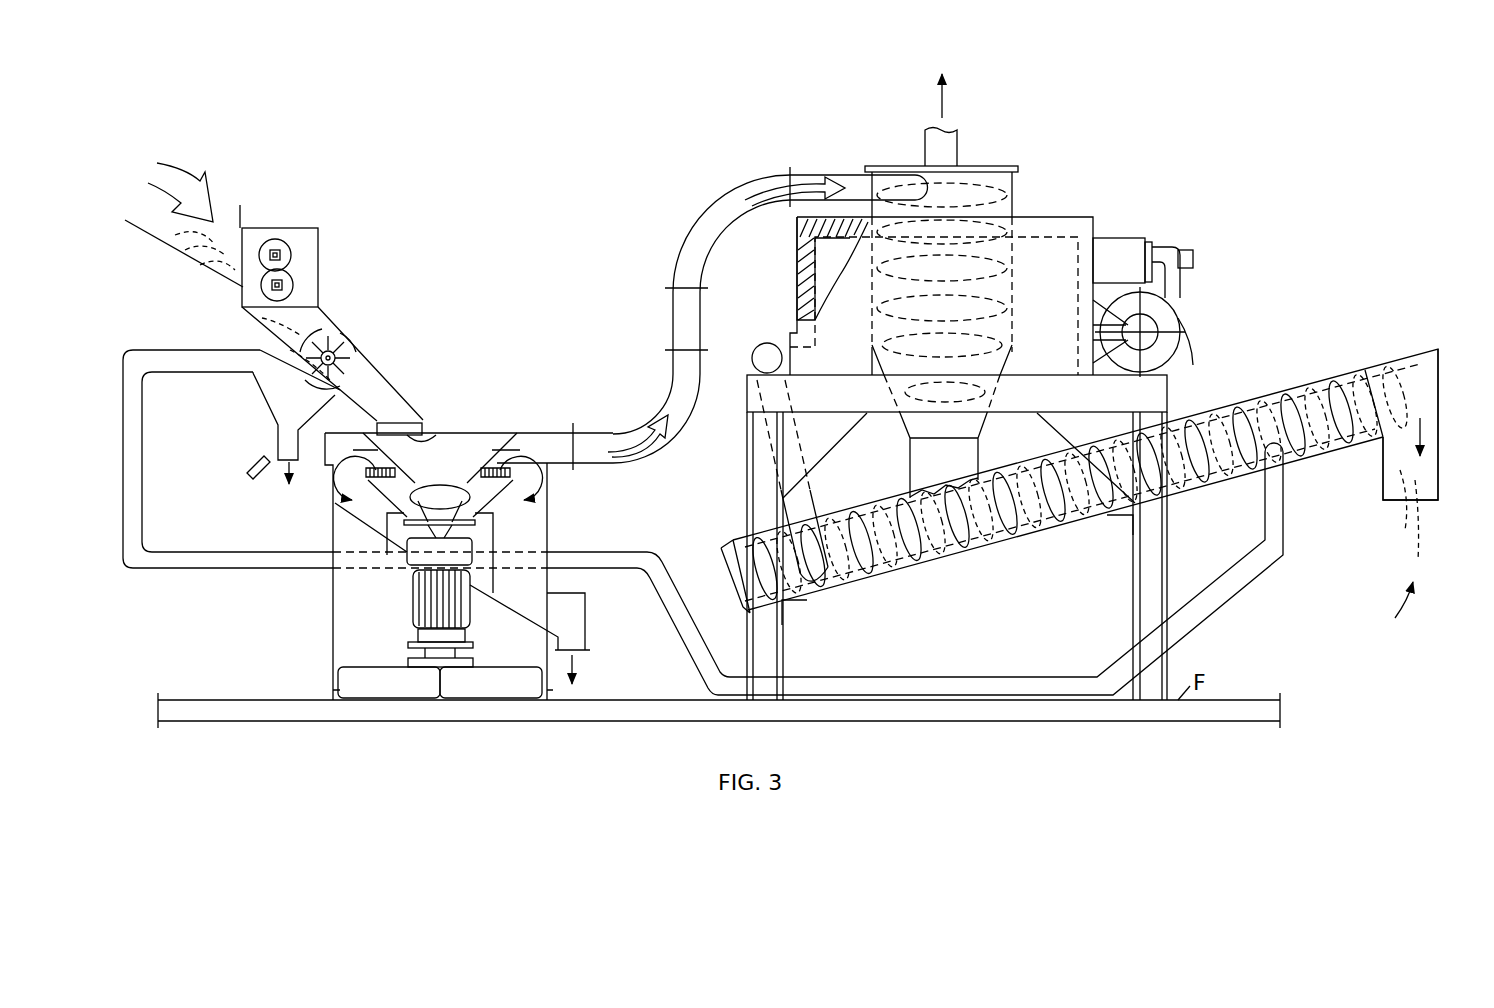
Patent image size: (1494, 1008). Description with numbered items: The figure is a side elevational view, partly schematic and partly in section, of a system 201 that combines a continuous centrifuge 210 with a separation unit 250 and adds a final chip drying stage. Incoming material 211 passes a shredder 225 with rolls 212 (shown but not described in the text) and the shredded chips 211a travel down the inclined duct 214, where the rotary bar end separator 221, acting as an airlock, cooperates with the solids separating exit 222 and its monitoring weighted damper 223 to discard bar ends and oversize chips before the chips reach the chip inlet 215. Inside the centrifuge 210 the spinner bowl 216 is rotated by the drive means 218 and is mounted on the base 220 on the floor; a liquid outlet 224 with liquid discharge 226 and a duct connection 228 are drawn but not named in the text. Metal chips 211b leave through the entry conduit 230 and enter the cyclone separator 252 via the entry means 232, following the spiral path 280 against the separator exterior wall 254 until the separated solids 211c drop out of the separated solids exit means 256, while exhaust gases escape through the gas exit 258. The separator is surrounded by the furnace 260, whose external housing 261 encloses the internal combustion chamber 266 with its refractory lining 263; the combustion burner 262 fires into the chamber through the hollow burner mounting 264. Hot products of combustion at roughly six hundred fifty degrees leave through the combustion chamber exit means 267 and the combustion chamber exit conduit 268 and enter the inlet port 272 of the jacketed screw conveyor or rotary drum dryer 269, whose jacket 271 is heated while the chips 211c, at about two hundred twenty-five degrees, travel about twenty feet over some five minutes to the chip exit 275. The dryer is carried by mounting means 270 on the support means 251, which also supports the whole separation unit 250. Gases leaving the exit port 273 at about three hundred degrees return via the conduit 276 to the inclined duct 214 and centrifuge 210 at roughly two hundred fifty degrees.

The combination or system 201 is at (458, 128).
The continuous centrifuge 210 is at (280, 613).
The waste material input 211 is at (228, 205).
The shredded chips 211a is at (287, 325).
The metal chips 211b is at (658, 446).
The separated solids 211c is at (930, 475).
The shredder rollers 212 is at (252, 293).
The inclined duct 214 is at (324, 313).
The chip inlet 215 is at (421, 437).
The spinner bowl 216 is at (463, 474).
The drive means 218 is at (412, 596).
The base 220 is at (503, 694).
The rotary bar end separator 221 is at (346, 356).
The solids separating exit 222 is at (275, 440).
The monitoring weighted damper 223 is at (250, 467).
The liquid outlet 224 is at (558, 622).
The shredder 225 is at (272, 228).
The liquid discharge 226 is at (585, 656).
The duct flange 228 is at (568, 450).
The entry conduit 230 is at (695, 222).
The entry means 232 is at (830, 120).
The separation unit 250 is at (1225, 124).
The support means 251 is at (1155, 523).
The cyclone separator 252 is at (897, 166).
The cyclone separator exterior wall 254 is at (1012, 302).
The separated solids exit means 256 is at (980, 445).
The gas exit 258 is at (932, 138).
The furnace 260 is at (1095, 225).
The external housing 261 is at (1067, 272).
The combustion burner 262 is at (1166, 341).
The refractory lining 263 is at (803, 287).
The hollow burner mounting 264 is at (1137, 276).
The internal combustion chamber 266 is at (827, 257).
The combustion chamber exit means 267 is at (602, 357).
The combustion chamber exit conduit 268 is at (797, 508).
The jacketed screw conveyor or rotary drum dryer 269 is at (730, 537).
The mounting means 270 is at (795, 601).
The jacket 271 is at (1048, 509).
The inlet port 272 is at (822, 580).
The exit port 273 is at (1282, 460).
The chip exit 275 is at (1393, 503).
The conduit 276 is at (143, 528).
The spiral path 280 is at (888, 352).